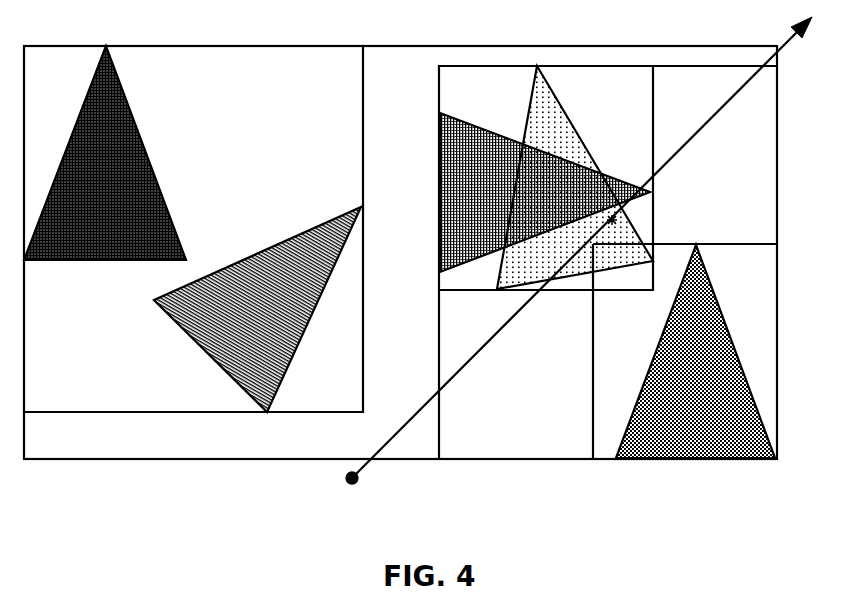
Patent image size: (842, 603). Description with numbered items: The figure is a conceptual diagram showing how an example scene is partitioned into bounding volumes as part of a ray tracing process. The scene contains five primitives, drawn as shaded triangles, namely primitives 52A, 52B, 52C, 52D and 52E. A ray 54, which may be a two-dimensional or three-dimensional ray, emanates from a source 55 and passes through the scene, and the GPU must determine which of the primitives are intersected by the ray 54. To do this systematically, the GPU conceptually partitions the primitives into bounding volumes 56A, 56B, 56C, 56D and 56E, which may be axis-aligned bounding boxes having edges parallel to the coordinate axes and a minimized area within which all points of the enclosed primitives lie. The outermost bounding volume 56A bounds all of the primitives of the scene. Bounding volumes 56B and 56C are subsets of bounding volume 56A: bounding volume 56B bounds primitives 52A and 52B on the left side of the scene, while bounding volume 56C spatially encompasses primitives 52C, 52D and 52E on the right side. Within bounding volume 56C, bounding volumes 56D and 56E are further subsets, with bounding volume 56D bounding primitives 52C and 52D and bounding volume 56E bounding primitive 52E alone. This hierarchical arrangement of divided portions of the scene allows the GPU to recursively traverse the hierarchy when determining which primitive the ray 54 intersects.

The primitive 52A is at (113, 72).
The primitive 52B is at (285, 374).
The primitive 52C is at (445, 110).
The primitive 52D is at (563, 105).
The primitive 52E is at (703, 268).
The ray 54 is at (467, 368).
The source 55 is at (356, 484).
The bounding volume 56A is at (386, 46).
The bounding volume 56B is at (363, 115).
The bounding volume 56C is at (678, 65).
The bounding volume 56D is at (653, 110).
The bounding volume 56E is at (697, 245).